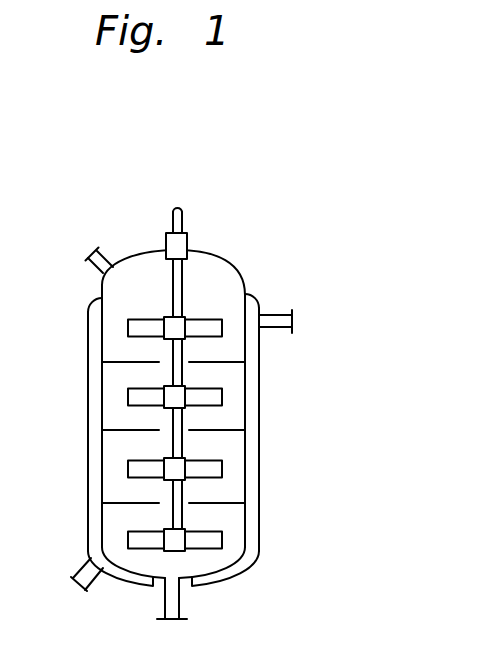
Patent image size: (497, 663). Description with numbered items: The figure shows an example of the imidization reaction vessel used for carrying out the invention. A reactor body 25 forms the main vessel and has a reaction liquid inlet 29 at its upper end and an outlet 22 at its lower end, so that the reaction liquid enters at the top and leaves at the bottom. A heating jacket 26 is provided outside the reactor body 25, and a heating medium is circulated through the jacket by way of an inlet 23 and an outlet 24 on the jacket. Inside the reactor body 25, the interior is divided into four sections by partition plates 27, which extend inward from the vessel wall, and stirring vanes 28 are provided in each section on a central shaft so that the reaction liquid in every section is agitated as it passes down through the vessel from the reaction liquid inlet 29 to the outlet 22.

The outlet 22 is at (179, 608).
The inlet 23 is at (77, 575).
The outlet 24 is at (285, 313).
The reactor body 25 is at (225, 262).
The heating jacket 26 is at (260, 462).
The partition plates 27 is at (225, 363).
The stirring vanes 28 is at (222, 400).
The reaction liquid inlet 29 is at (100, 250).